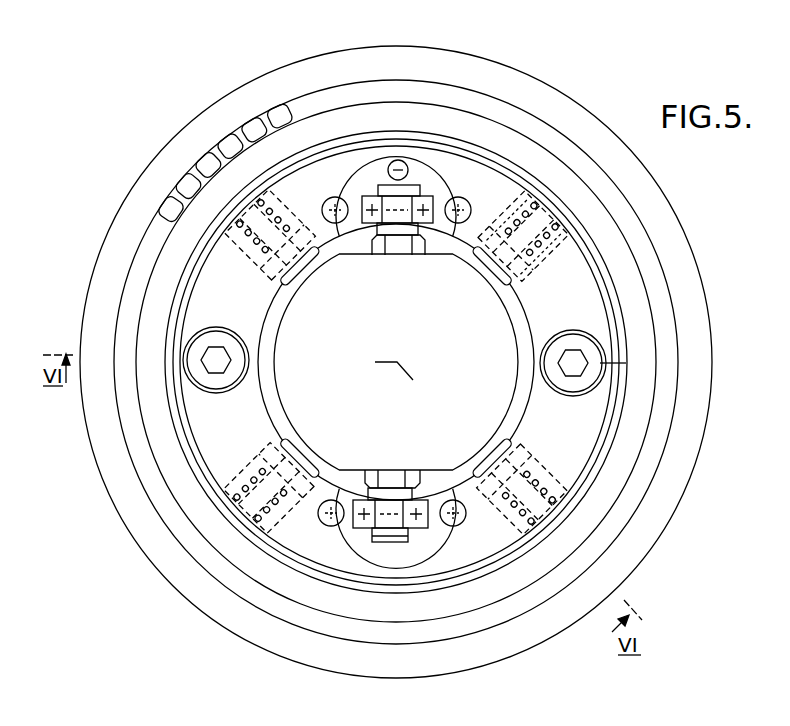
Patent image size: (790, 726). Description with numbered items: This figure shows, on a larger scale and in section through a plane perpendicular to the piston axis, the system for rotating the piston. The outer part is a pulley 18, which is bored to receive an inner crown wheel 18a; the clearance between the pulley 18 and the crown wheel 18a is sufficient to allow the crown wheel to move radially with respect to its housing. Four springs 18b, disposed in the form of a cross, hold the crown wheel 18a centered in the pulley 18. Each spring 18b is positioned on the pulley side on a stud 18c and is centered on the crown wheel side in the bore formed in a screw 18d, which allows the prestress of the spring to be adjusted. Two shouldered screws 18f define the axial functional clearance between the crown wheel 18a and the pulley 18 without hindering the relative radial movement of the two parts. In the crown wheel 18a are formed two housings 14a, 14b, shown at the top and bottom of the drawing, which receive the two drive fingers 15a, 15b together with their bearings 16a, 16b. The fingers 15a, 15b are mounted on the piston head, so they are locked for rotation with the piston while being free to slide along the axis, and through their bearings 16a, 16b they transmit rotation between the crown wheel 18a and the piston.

The pulley 18 is at (621, 400).
The inner crown wheel 18a is at (549, 318).
The springs 18b is at (242, 198).
The stud 18c is at (553, 222).
The screw 18d is at (480, 264).
The shouldered screws 18f is at (203, 340).
The housing 14a is at (433, 197).
The finger 15a is at (410, 197).
The bearing 16a is at (450, 196).
The housing 14b is at (368, 522).
The finger 15b is at (410, 536).
The bearing 16b is at (388, 516).